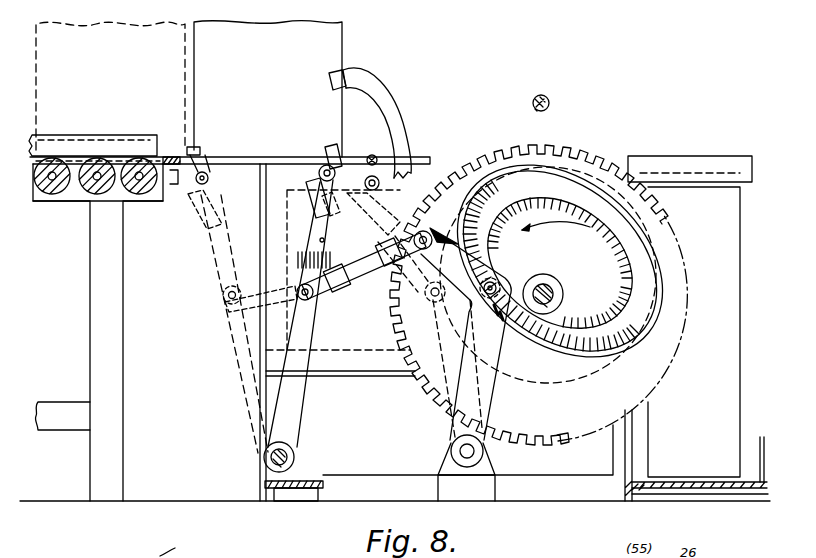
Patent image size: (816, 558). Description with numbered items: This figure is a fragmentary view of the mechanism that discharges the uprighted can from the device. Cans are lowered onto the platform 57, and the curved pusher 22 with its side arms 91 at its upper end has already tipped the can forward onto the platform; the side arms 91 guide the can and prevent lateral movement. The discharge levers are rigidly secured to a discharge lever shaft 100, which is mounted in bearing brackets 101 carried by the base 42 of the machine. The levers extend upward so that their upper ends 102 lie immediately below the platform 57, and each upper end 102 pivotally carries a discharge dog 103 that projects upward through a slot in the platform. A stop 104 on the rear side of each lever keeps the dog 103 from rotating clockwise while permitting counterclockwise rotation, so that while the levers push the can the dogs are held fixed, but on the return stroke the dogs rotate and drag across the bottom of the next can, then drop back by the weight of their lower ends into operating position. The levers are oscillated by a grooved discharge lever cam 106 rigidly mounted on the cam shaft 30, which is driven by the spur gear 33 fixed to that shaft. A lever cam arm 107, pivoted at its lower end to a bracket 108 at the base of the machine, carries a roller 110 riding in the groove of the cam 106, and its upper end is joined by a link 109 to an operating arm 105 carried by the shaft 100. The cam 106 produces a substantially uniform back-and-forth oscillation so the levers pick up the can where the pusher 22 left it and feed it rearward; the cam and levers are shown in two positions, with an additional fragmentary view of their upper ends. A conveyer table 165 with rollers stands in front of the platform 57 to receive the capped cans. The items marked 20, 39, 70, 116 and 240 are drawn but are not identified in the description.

The frame 20 is at (726, 158).
The pusher 22 is at (388, 118).
The cam shaft 30 is at (548, 286).
The spur gear 33 is at (596, 155).
The plate 39 is at (665, 162).
The base 42 is at (322, 483).
The platform 57 is at (171, 152).
The pin 70 is at (532, 104).
The side arms 91 is at (330, 80).
The discharge lever shaft 100 is at (265, 460).
The bearing brackets 101 is at (292, 470).
The upper ends 102 is at (325, 197).
The discharge dog 103 is at (208, 150).
The stop 104 is at (190, 210).
The operating arm 105 is at (223, 333).
The discharge lever cam 106 is at (645, 294).
The lever cam arm 107 is at (457, 418).
The bracket 108 is at (450, 460).
The link 109 is at (375, 282).
The roller 110 is at (500, 264).
The bracket 116 is at (100, 193).
The conveyer table 165 is at (67, 200).
The pin 240 is at (322, 240).